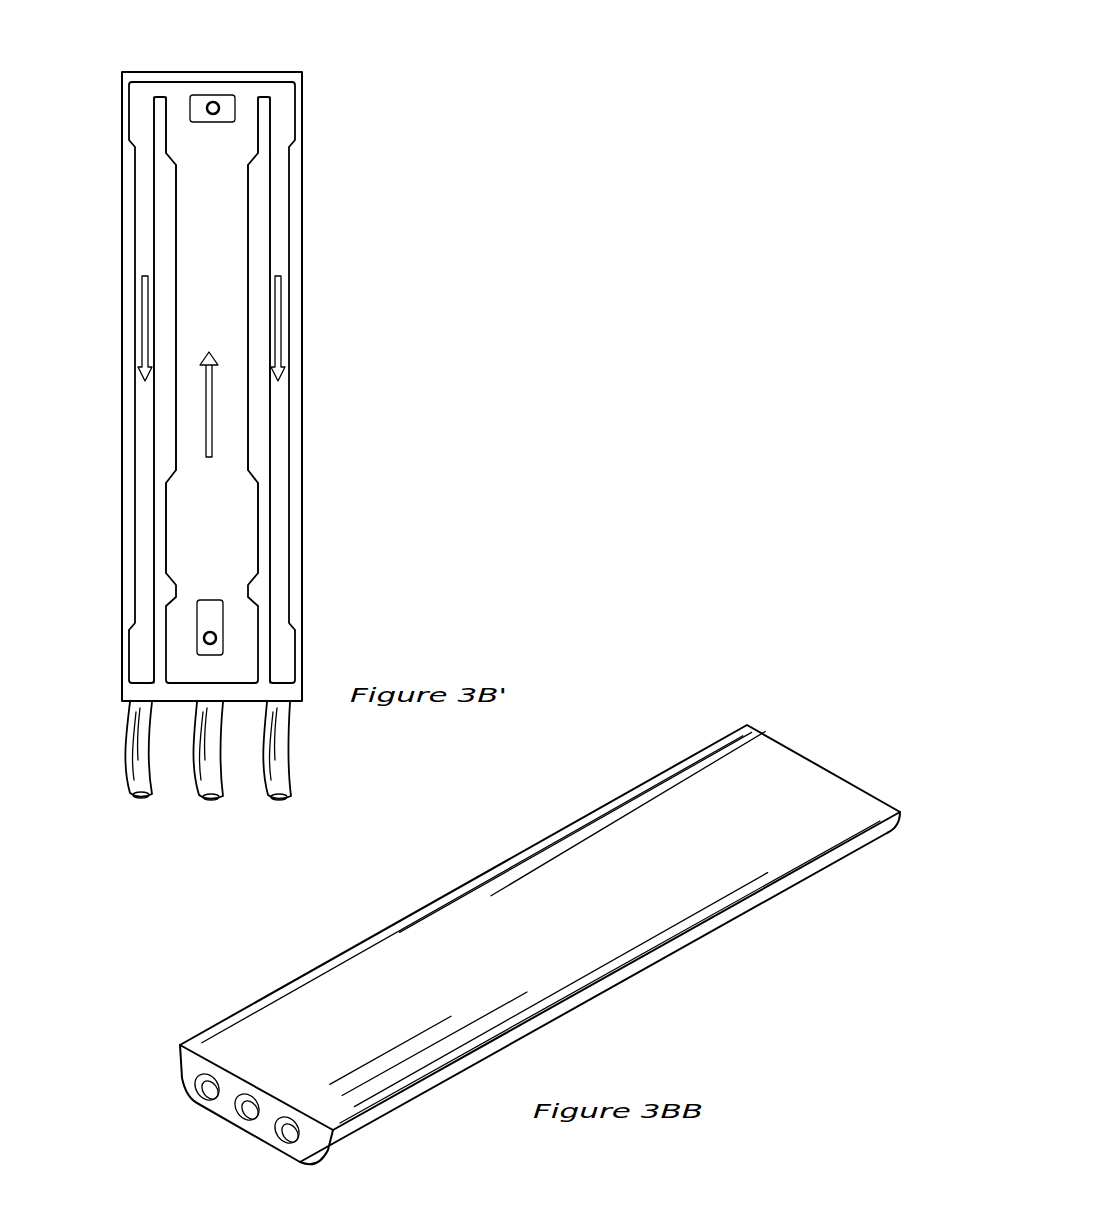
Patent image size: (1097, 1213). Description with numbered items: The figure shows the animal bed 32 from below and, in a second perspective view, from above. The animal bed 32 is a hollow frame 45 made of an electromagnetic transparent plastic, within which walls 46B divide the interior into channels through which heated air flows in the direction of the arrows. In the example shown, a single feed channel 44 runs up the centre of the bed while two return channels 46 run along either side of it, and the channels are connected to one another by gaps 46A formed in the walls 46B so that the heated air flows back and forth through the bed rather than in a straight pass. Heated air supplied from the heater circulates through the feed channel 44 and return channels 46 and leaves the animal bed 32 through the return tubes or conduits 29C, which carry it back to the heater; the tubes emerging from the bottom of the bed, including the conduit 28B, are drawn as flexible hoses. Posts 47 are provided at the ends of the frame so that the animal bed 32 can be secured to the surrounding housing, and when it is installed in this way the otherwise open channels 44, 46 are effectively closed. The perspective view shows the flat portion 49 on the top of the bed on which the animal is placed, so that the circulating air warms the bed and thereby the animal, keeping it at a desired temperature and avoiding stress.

In FIG. 3B', the animal bed 32 is at (93, 333).
In FIG. 3BB, the animal bed 32 is at (307, 930).
In FIG. 3B', the hollow frame 45 is at (278, 70).
In FIG. 3BB, the hollow frame 45 is at (223, 1107).
In FIG. 3B', the return channels 46 is at (145, 398).
In FIG. 3B', the gaps 46A is at (162, 93).
In FIG. 3B', the walls 46B is at (160, 234).
In FIG. 3B', the posts 47 is at (213, 95).
In FIG. 3B', the feed channel 44 is at (222, 563).
In FIG. 3B', the return tubes/conduits 29C is at (123, 747).
In FIG. 3B', the center cable 28B is at (190, 780).
In FIG. 3BB, the flat portion 49 is at (740, 883).